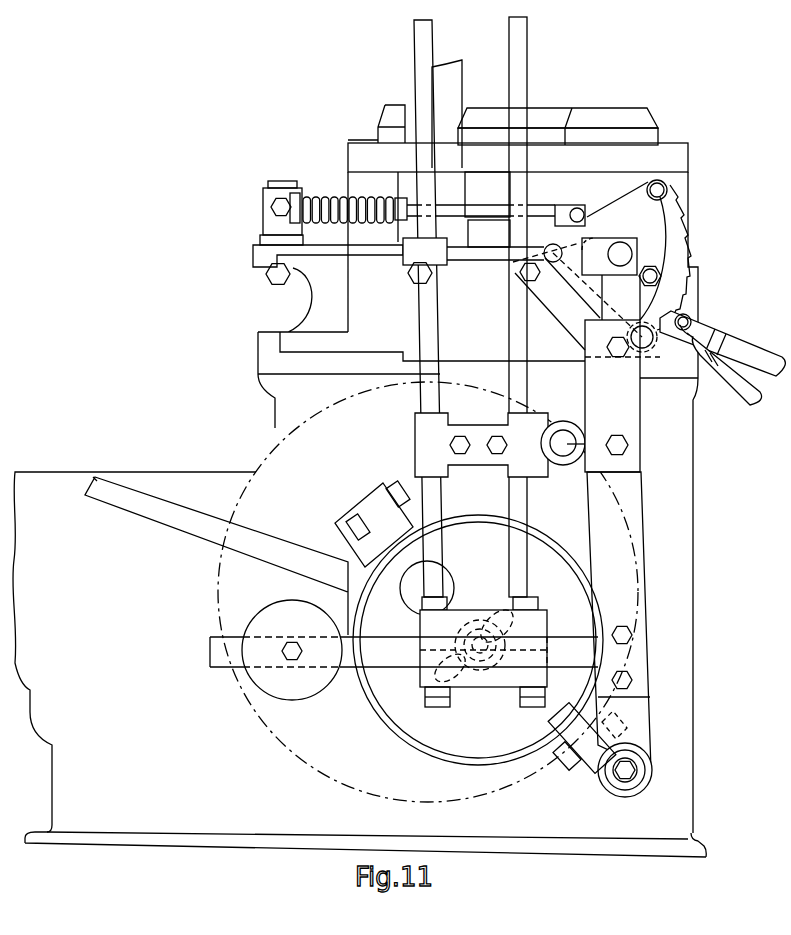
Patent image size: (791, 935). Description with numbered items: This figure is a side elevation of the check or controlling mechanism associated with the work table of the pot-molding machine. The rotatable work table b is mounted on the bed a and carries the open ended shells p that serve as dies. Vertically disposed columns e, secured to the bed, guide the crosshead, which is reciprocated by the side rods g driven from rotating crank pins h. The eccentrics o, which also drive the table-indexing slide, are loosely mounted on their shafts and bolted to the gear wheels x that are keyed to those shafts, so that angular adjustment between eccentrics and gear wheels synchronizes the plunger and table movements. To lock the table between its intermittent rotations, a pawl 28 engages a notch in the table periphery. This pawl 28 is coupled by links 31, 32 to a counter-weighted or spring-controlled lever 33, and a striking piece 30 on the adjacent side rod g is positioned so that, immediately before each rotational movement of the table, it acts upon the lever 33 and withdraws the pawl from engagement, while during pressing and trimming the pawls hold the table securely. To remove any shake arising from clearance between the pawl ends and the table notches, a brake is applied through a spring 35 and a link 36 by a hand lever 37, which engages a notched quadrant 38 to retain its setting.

The columns e is at (450, 95).
The open ended shells p is at (602, 115).
The rotatable work table b is at (675, 163).
The bed a is at (684, 283).
The side rods g is at (522, 557).
The crank pins h is at (484, 678).
The eccentrics o is at (405, 698).
The gear wheels x is at (340, 767).
The pawl 28 is at (460, 229).
The striking piece 30 is at (630, 444).
The link 31 is at (372, 252).
The link 32 is at (473, 255).
The lever 33 is at (640, 653).
The spring 35 is at (322, 197).
The link 36 is at (485, 210).
The hand lever 37 is at (781, 372).
The notched quadrant 38 is at (668, 223).